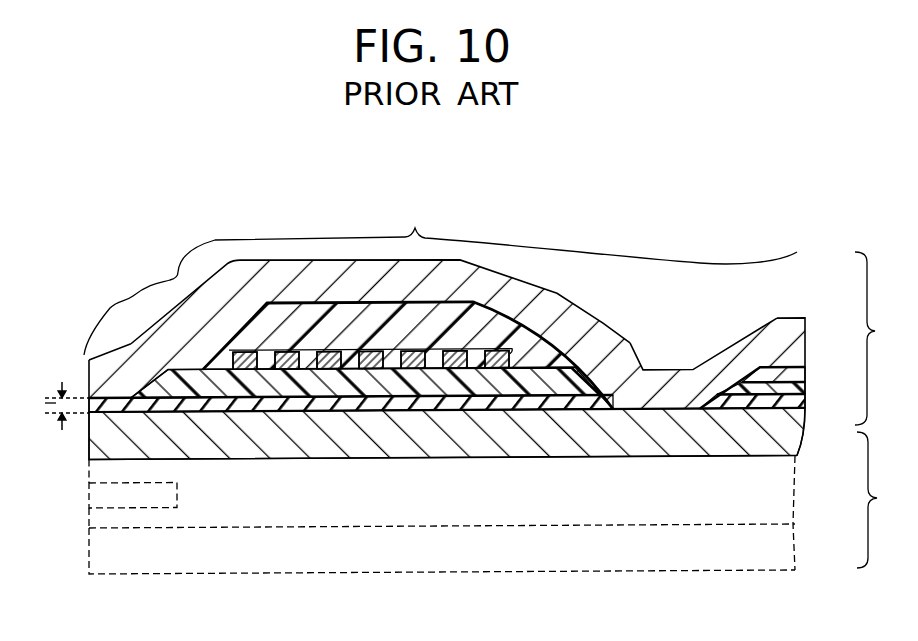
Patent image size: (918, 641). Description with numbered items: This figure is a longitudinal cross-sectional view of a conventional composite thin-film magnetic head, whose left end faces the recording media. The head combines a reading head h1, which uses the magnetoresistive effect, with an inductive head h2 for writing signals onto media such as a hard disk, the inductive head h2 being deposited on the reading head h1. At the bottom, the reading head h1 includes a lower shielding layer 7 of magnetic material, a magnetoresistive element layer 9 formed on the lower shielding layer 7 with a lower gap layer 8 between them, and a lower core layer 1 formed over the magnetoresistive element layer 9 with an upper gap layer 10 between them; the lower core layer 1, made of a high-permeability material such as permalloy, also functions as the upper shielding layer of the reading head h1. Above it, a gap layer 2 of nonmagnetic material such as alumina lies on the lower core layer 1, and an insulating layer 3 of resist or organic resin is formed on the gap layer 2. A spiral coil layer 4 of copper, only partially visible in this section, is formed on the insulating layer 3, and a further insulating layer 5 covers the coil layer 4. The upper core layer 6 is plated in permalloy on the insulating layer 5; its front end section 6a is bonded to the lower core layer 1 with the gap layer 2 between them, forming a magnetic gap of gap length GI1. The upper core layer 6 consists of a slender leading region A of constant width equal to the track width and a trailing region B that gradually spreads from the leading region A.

The lower core layer 1 is at (283, 440).
The gap layer 2 is at (449, 405).
The insulating layer 3 is at (574, 378).
The coil layer 4 is at (364, 350).
The insulating layer 5 is at (490, 330).
The upper core layer 6 is at (477, 278).
The front end section 6a is at (117, 375).
The lower shielding layer 7 is at (115, 547).
The lower gap layer 8 is at (103, 515).
The magnetoresistive element layer 9 is at (117, 492).
The upper gap layer 10 is at (120, 472).
The leading region A is at (131, 313).
The trailing region B is at (487, 233).
The reading head h1 is at (883, 500).
The inductive head h2 is at (882, 338).
The gap length GI1 is at (49, 406).